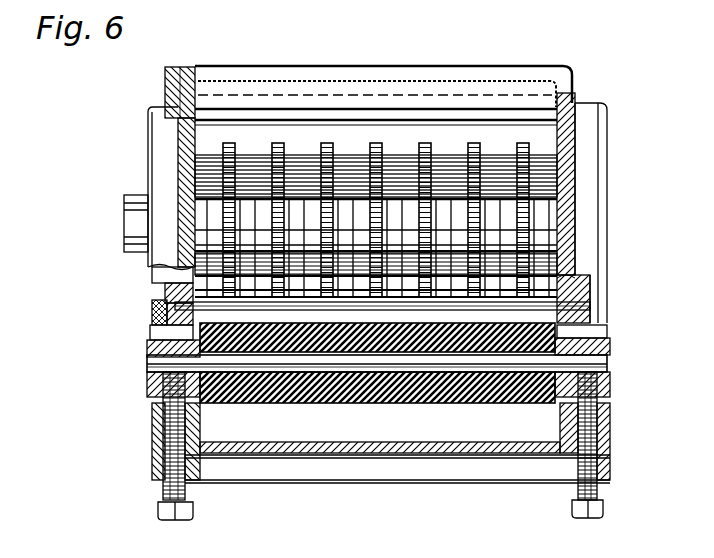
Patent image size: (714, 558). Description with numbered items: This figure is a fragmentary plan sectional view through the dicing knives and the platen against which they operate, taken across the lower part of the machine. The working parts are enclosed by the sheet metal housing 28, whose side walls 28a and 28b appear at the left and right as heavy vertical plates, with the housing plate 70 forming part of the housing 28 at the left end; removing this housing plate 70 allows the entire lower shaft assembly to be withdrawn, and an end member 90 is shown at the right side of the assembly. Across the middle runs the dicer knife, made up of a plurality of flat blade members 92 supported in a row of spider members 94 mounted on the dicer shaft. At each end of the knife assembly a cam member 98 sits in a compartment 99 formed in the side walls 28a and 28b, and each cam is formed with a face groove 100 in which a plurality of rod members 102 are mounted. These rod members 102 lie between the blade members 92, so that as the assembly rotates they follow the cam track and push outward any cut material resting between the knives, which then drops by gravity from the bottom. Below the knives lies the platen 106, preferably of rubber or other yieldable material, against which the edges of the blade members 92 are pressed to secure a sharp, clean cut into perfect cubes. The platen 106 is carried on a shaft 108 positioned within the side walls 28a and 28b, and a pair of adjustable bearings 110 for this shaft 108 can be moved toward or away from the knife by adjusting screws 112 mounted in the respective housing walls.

The housing 28 is at (403, 458).
The side wall of housing 28a is at (157, 282).
The side wall of housing 28b is at (565, 202).
The housing plate 70 is at (178, 142).
The right end flange 90 is at (557, 170).
The flat blade members 92 is at (545, 132).
The spider members 94 is at (419, 145).
The cam members 98 is at (163, 307).
The compartments 99 is at (608, 302).
The face groove 100 is at (150, 325).
The rod members 102 is at (567, 307).
The platen 106 is at (287, 397).
The shaft 108 is at (157, 363).
The adjustable bearings 110 is at (147, 383).
The adjusting screws 112 is at (152, 420).